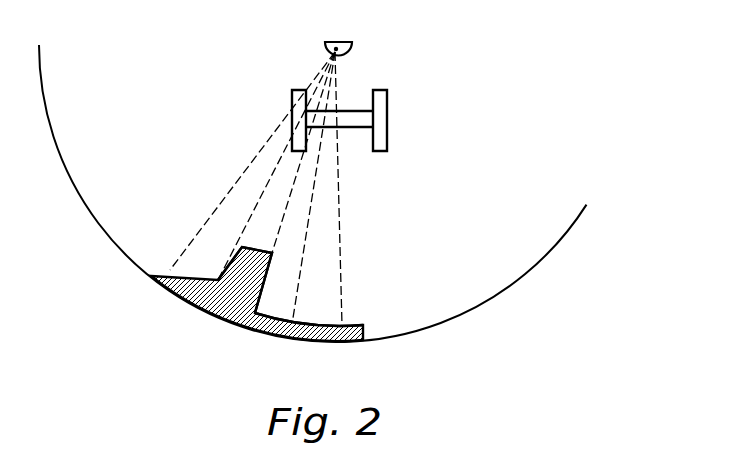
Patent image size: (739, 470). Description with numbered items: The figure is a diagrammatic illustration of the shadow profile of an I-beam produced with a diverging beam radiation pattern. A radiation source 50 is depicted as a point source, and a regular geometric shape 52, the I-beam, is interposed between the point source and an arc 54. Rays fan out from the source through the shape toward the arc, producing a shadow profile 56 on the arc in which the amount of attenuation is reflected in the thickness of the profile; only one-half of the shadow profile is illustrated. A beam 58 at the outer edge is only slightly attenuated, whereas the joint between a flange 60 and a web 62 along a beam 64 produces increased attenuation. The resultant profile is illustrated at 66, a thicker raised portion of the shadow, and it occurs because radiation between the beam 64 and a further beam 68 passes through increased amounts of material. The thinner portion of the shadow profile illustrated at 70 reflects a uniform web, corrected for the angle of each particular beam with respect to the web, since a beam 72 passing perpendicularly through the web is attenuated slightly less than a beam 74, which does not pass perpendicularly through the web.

The radiation source 50 is at (351, 45).
The regular geometric shape 52 is at (439, 136).
The arc 54 is at (540, 258).
The shadow profile 56 is at (374, 313).
The beam 58 is at (242, 175).
The flange 60 is at (292, 116).
The web 62 is at (360, 128).
The beam 64 is at (257, 206).
The resultant profile 66 is at (259, 250).
The beam 68 is at (282, 228).
The shadow profile portion 70 is at (300, 320).
The beam 72 is at (342, 273).
The beam 74 is at (312, 210).